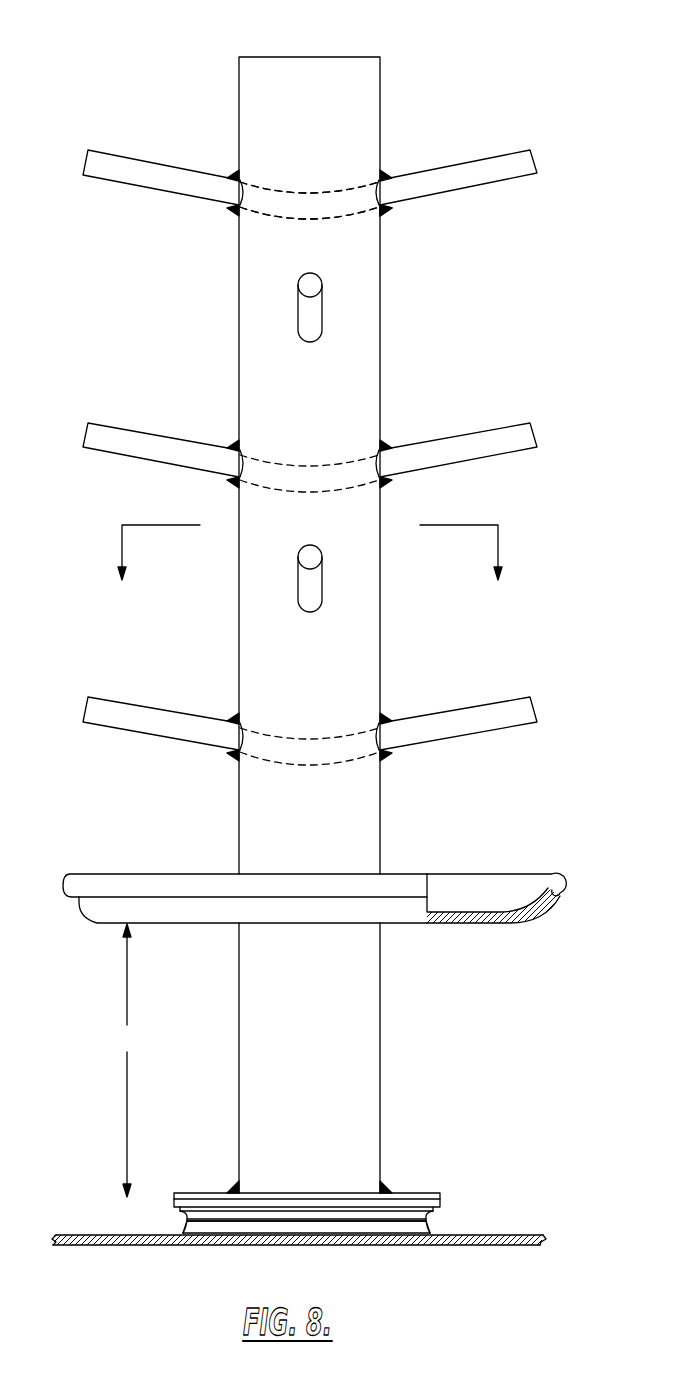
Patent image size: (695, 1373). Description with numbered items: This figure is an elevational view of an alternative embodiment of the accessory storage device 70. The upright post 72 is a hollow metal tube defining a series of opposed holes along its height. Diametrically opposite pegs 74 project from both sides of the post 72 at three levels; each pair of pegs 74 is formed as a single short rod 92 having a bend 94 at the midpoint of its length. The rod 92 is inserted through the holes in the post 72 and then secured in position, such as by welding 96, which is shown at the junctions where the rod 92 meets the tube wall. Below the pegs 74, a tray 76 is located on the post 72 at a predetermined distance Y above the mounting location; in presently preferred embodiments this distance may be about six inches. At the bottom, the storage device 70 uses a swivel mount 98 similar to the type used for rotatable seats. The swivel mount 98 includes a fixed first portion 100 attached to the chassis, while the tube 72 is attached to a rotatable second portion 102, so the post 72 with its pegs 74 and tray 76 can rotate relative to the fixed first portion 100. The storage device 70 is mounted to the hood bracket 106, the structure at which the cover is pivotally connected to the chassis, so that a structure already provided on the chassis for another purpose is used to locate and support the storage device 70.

The storage device 70 is at (473, 62).
The post 72 is at (357, 292).
The pegs 74 is at (488, 442).
The tray 76 is at (467, 910).
The rod 92 is at (267, 182).
The bend 94 is at (308, 192).
The welding 96 is at (383, 210).
The swivel mount 98 is at (452, 1205).
The first portion 100 is at (187, 1228).
The second portion 102 is at (428, 1197).
The hood bracket 106 is at (522, 1235).